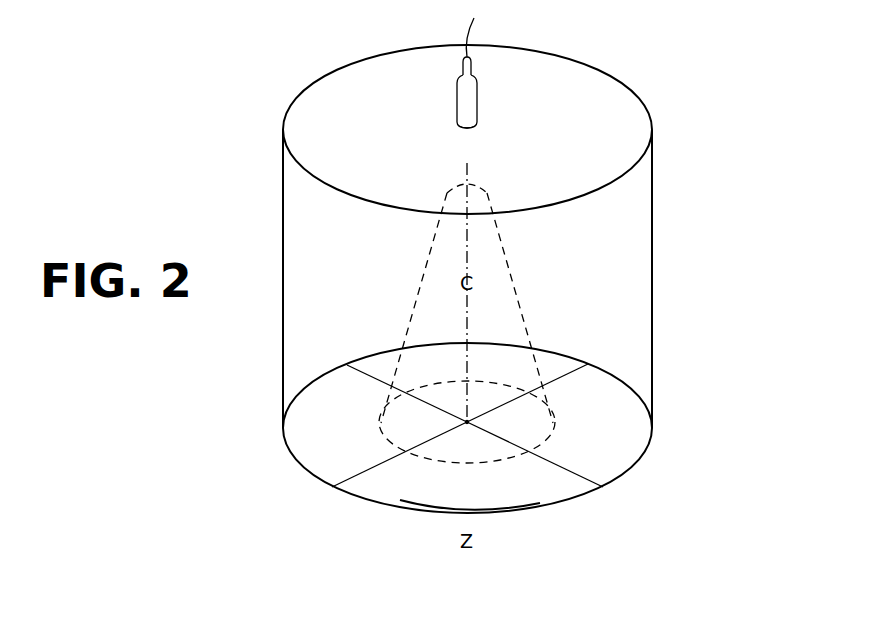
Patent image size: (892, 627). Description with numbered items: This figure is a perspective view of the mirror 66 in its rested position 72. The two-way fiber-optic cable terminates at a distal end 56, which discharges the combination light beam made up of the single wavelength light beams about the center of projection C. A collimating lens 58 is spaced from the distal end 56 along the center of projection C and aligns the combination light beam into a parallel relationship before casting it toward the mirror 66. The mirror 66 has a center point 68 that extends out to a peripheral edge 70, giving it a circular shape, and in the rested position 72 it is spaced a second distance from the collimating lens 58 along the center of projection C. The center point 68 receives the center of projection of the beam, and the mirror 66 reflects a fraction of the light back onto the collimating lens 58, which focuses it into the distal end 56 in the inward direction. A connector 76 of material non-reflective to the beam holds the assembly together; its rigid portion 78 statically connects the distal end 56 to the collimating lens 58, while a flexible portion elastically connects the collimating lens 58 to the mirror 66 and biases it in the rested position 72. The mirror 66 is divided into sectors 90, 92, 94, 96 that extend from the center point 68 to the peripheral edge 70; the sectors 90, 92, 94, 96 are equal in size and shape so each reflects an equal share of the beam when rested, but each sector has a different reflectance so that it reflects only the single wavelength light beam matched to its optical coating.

The distal end 56 is at (474, 62).
The collimating lens 58 is at (458, 128).
The mirror 66 is at (583, 497).
The center point 68 is at (465, 421).
The peripheral edge 70 is at (308, 477).
The rested position 72 is at (301, 71).
The connector 76 is at (633, 88).
The rigid portion 78 is at (478, 104).
The sector 90 is at (505, 364).
The sector 92 is at (605, 403).
The sector 94 is at (418, 487).
The sector 96 is at (335, 425).